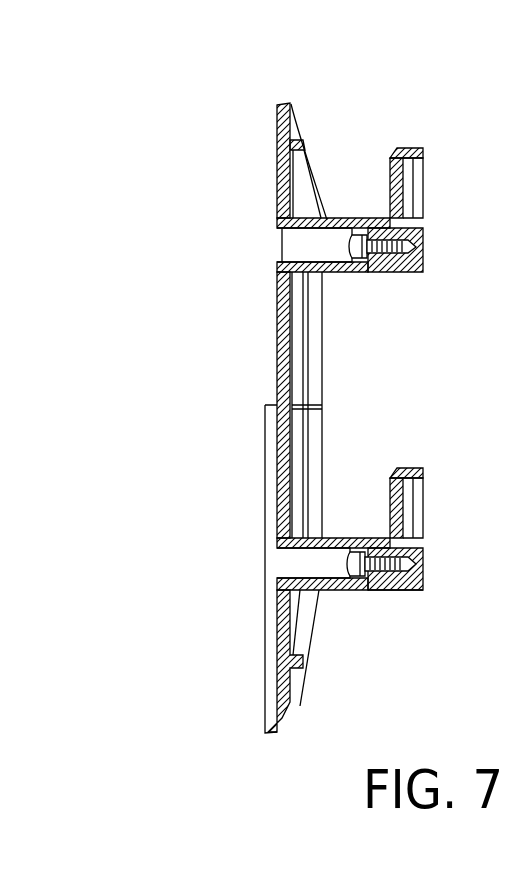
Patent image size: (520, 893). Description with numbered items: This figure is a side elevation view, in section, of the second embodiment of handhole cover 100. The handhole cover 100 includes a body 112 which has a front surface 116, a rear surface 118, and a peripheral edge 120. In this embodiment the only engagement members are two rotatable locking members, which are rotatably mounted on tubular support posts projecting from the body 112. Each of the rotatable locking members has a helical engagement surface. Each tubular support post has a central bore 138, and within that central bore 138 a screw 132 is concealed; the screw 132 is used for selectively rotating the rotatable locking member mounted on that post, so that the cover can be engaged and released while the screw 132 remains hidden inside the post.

The handhole cover 100 is at (222, 532).
The body 112 is at (276, 636).
The front surface 116 is at (277, 372).
The rear surface 118 is at (323, 335).
The peripheral edge 120 is at (283, 102).
The screw 132 is at (381, 592).
The central bore 138 is at (340, 590).